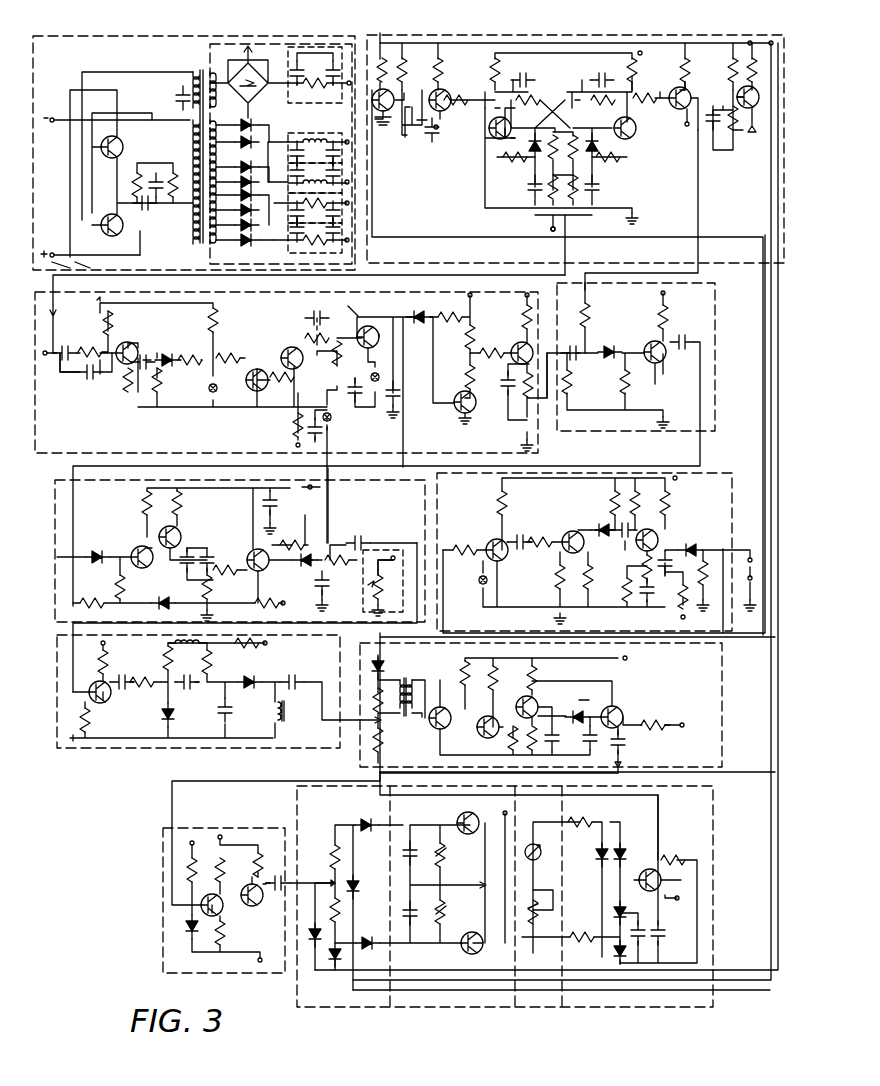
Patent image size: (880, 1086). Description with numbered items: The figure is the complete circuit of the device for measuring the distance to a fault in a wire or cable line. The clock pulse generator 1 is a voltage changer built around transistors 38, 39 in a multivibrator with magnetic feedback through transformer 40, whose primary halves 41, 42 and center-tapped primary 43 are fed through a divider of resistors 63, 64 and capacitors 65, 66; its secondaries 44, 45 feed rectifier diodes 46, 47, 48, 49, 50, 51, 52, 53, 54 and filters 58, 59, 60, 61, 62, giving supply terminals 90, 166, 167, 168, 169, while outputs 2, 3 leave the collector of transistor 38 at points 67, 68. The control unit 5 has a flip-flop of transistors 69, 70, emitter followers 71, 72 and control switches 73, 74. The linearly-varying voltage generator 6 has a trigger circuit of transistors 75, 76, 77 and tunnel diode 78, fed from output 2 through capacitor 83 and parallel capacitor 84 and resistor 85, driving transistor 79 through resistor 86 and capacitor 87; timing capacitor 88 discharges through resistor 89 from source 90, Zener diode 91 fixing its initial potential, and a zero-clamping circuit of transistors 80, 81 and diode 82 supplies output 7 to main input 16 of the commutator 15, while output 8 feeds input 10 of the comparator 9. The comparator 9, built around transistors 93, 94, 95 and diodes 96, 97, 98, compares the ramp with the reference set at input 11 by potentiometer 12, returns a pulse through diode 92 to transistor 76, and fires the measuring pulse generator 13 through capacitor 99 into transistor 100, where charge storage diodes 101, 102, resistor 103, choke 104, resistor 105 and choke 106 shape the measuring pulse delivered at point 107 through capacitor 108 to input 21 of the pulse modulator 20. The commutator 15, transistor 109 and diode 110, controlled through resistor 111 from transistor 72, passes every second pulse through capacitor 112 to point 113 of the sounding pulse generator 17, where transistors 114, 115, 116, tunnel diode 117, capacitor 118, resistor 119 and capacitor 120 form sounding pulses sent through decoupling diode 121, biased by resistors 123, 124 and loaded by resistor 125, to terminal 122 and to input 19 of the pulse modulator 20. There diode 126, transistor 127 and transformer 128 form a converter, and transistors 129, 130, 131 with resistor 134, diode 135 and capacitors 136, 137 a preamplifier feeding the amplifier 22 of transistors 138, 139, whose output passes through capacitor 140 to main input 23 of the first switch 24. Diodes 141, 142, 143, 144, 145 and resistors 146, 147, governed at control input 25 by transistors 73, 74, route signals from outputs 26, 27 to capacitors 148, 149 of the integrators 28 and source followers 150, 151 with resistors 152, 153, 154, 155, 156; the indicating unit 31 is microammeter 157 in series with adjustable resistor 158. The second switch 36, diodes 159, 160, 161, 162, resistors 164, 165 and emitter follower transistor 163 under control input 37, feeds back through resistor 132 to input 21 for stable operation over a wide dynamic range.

The clock pulse generator 1 is at (76, 36).
The output 2 is at (58, 268).
The output 3 is at (87, 268).
The control unit 5 is at (380, 34).
The linearly-varying voltage generator 6 is at (35, 318).
The output 7 is at (537, 399).
The output 8 is at (328, 452).
The comparator 9 is at (55, 525).
The input 10 is at (60, 549).
The input 11 is at (326, 542).
The potentiometer 12 is at (383, 583).
The measuring pulse generator 13 is at (57, 666).
The commutator 15 is at (715, 318).
The main input 16 is at (558, 352).
The sounding pulse generator 17 is at (732, 514).
The input 19 is at (380, 664).
The pulse modulator 20 is at (722, 694).
The input 21 is at (363, 739).
The amplifier 22 is at (163, 850).
The main input 23 is at (330, 880).
The first switch 24 is at (297, 810).
The control input 25 is at (353, 993).
The output 26 is at (373, 820).
The output 27 is at (374, 945).
The integrator 28 is at (519, 816).
The indicating unit 31 is at (513, 809).
The second switch 36 is at (713, 830).
The control input 37 is at (602, 983).
The transistor 38 is at (107, 159).
The transistor 39 is at (107, 234).
The transformer 40 is at (204, 170).
The primary half 41 is at (193, 212).
The primary half 42 is at (178, 98).
The primary 43 is at (193, 70).
The secondary 44 is at (222, 242).
The secondary 45 is at (228, 48).
The diode 46 is at (248, 242).
The diode 47 is at (241, 119).
The diode 48 is at (254, 244).
The diode 49 is at (250, 138).
The diode 50 is at (235, 192).
The diode 51 is at (250, 178).
The diode 52 is at (276, 238).
The diode 53 is at (240, 159).
The diode 54 is at (270, 50).
The filter 58 is at (317, 242).
The filter 59 is at (317, 205).
The filter 60 is at (317, 177).
The filter 61 is at (317, 140).
The filter 62 is at (317, 78).
The resistor 63 is at (136, 182).
The resistor 64 is at (172, 172).
The capacitor 65 is at (145, 213).
The capacitor 66 is at (156, 172).
The point 67 is at (46, 343).
The point 68 is at (568, 217).
The transistor 69 is at (510, 116).
The transistor 70 is at (621, 124).
The transistor 71 is at (446, 93).
The transistor 72 is at (677, 90).
The transistor 73 is at (392, 96).
The transistor 74 is at (755, 102).
The transistor 75 is at (138, 345).
The transistor 76 is at (247, 380).
The transistor 77 is at (286, 350).
The tunnel diode 78 is at (223, 394).
The transistor 79 is at (364, 329).
The transistor 80 is at (476, 407).
The transistor 81 is at (515, 344).
The diode 82 is at (418, 307).
The capacitor 83 is at (65, 344).
The capacitor 84 is at (86, 375).
The resistor 85 is at (90, 343).
The resistor 86 is at (317, 349).
The capacitor 87 is at (317, 308).
The timing capacitor 88 is at (405, 399).
The current-limiting resistor 89 is at (372, 316).
The high-potential source 90 is at (349, 188).
The Zener diode 91 is at (384, 366).
The diode 92 is at (339, 418).
The transistor 93 is at (134, 553).
The transistor 94 is at (166, 530).
The transistor 95 is at (255, 567).
The diode 96 is at (96, 548).
The diode 97 is at (165, 594).
The diode 98 is at (297, 570).
The capacitor 99 is at (360, 539).
The transistor 100 is at (111, 696).
The charge storage diode 101 is at (184, 715).
The charge storage diode 102 is at (254, 684).
The resistor 103 is at (155, 658).
The first choke 104 is at (187, 655).
The resistor 105 is at (207, 682).
The second choke 106 is at (297, 712).
The point 107 is at (278, 667).
The capacitor 108 is at (300, 673).
The transistor 109 is at (670, 357).
The diode 110 is at (611, 344).
The resistor 111 is at (601, 315).
The capacitor 112 is at (387, 462).
The point 113 is at (453, 561).
The transistor 114 is at (494, 546).
The transistor 115 is at (578, 530).
The transistor 116 is at (653, 529).
The tunnel diode 117 is at (478, 584).
The capacitor 118 is at (520, 534).
The resistor 119 is at (545, 533).
The capacitor 120 is at (626, 539).
The decoupling diode 121 is at (686, 541).
The terminal 122 is at (753, 584).
The resistor 123 is at (614, 590).
The resistor 124 is at (680, 564).
The load resistor 125 is at (704, 553).
The diode 126 is at (394, 660).
The transistor 127 is at (438, 698).
The transformer 128 is at (412, 676).
The transistor 129 is at (482, 718).
The transistor 130 is at (522, 698).
The transistor 131 is at (629, 710).
The resistor 132 is at (394, 741).
The resistor 134 is at (463, 672).
The diode 135 is at (578, 705).
The capacitor 136 is at (577, 738).
The capacitor 137 is at (634, 748).
The transistor 138 is at (292, 806).
The transistor 139 is at (267, 898).
The capacitor 140 is at (273, 864).
The diode 141 is at (304, 933).
The diode 142 is at (331, 955).
The diode 143 is at (370, 827).
The diode 144 is at (368, 887).
The diode 145 is at (371, 934).
The resistor 146 is at (322, 857).
The resistor 147 is at (331, 910).
The capacitor 148 is at (399, 855).
The capacitor 149 is at (399, 916).
The source follower 150 is at (459, 818).
The source follower 151 is at (464, 952).
The resistor 152 is at (455, 855).
The resistor 153 is at (455, 912).
The resistor 154 is at (463, 845).
The adjustable resistor 155 is at (475, 872).
The resistor 156 is at (464, 918).
The magneto-electric microammeter 157 is at (548, 856).
The adjustable resistor 158 is at (529, 907).
The diode 159 is at (600, 857).
The diode 160 is at (634, 853).
The diode 161 is at (617, 913).
The diode 162 is at (615, 954).
The transistor 163 is at (667, 880).
The resistor 164 is at (581, 834).
The resistor 165 is at (585, 928).
The terminal 166 is at (463, 441).
The terminal 167 is at (471, 449).
The terminal 168 is at (383, 579).
The terminal 169 is at (490, 444).